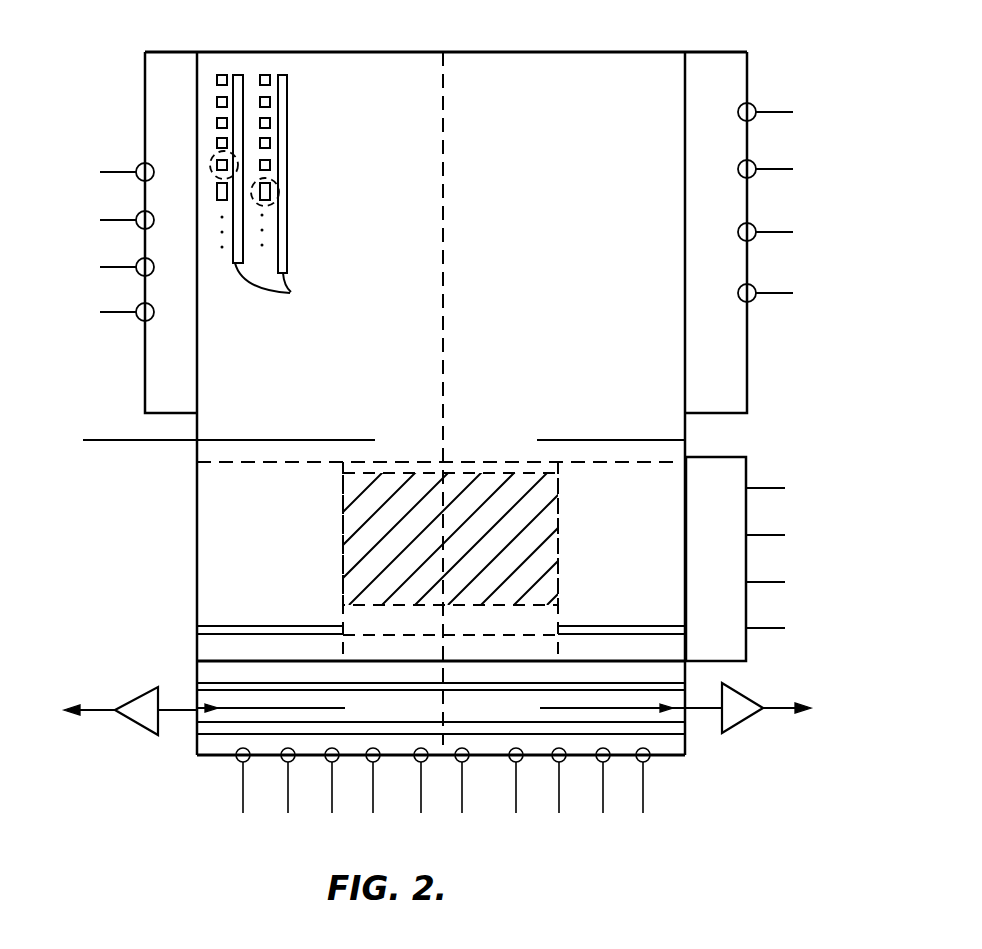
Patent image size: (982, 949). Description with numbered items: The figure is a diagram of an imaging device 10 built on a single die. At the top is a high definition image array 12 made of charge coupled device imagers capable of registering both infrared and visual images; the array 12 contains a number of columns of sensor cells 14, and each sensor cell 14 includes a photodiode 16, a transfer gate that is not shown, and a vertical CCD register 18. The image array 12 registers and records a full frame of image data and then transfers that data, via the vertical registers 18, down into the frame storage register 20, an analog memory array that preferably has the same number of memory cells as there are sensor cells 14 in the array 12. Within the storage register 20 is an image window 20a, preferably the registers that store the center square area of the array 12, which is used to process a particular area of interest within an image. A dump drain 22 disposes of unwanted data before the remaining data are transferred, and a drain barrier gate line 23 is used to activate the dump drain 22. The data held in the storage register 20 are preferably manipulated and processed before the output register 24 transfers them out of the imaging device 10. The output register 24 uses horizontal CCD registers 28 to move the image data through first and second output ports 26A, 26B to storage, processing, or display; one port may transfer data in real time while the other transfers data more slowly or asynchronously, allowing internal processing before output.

The imaging device 10 is at (738, 36).
The image array 12 is at (278, 52).
The sensor cell 14 is at (213, 155).
The photodiode 16 is at (217, 143).
The vertical CCD register 18 is at (276, 191).
The frame storage register 20 is at (197, 564).
The image window 20a is at (558, 505).
The dump drain 22 is at (197, 452).
The drain barrier gate line 23 is at (122, 440).
The output register 24 is at (197, 748).
The first output port 26A is at (136, 729).
The second output port 26B is at (745, 694).
The horizontal CCD register 28 is at (628, 684).